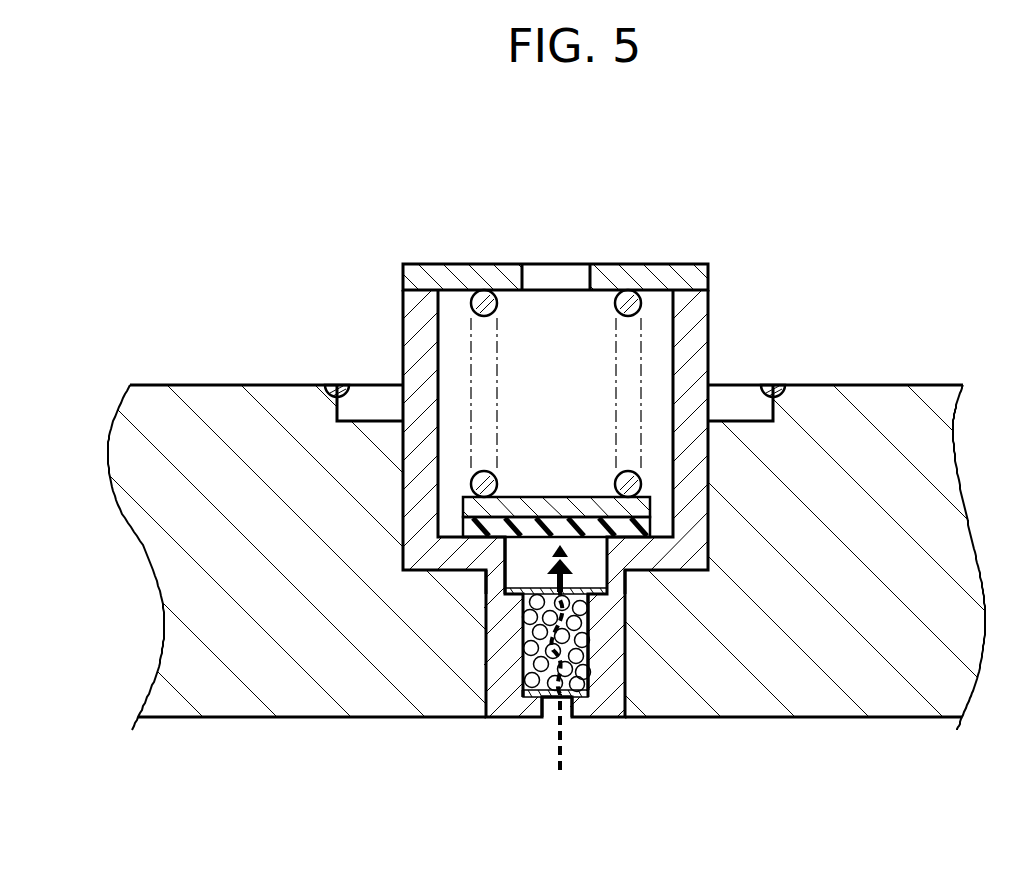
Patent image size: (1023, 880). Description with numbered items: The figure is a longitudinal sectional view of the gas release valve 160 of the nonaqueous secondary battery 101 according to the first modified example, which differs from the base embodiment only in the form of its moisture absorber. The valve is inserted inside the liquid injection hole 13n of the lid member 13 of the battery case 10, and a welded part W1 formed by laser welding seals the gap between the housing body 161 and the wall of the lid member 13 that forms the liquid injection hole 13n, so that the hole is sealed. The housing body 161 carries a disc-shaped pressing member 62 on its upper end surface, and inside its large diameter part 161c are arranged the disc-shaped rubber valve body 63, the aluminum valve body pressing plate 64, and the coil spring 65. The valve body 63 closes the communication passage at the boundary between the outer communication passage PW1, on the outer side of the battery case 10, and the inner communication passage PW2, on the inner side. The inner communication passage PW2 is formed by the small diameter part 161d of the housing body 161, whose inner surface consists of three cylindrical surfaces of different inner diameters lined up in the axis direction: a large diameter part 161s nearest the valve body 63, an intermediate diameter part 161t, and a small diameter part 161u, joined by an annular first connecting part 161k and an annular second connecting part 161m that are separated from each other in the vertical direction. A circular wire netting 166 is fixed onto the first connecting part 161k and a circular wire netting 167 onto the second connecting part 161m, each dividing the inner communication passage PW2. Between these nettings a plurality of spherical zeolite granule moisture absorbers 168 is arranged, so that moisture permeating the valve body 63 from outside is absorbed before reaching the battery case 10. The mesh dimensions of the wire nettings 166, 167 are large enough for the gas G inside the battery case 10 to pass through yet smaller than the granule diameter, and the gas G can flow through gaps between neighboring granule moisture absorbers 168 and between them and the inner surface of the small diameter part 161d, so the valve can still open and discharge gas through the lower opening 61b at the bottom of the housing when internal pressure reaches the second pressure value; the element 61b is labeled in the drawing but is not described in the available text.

The nonaqueous secondary battery 101 is at (655, 483).
The battery case 10 is at (547, 478).
The lid member 13 is at (547, 512).
The liquid injection hole 13n is at (402, 384).
The housing body 161 is at (556, 533).
The large diameter part 161c is at (700, 345).
The first connecting part 161k is at (617, 585).
The large diameter part 161s is at (505, 548).
The small diameter part 161d is at (615, 683).
The intermediate diameter part 161t is at (538, 690).
The small diameter part 161u is at (543, 718).
The second connecting part 161m is at (620, 700).
The pressing member 62 is at (549, 250).
The coil spring 65 is at (422, 298).
The gas release valve 160 is at (625, 272).
The valve body 63 is at (478, 528).
The valve body pressing plate 64 is at (472, 505).
The wire netting 166 is at (510, 590).
The wire netting 167 is at (515, 700).
The granule moisture absorber 168 is at (540, 643).
The outlet hole 61b is at (572, 718).
The outer communication passage PW1 is at (658, 298).
The inner communication passage PW2 is at (590, 495).
The welded part W1 is at (821, 356).
The gas G is at (556, 688).